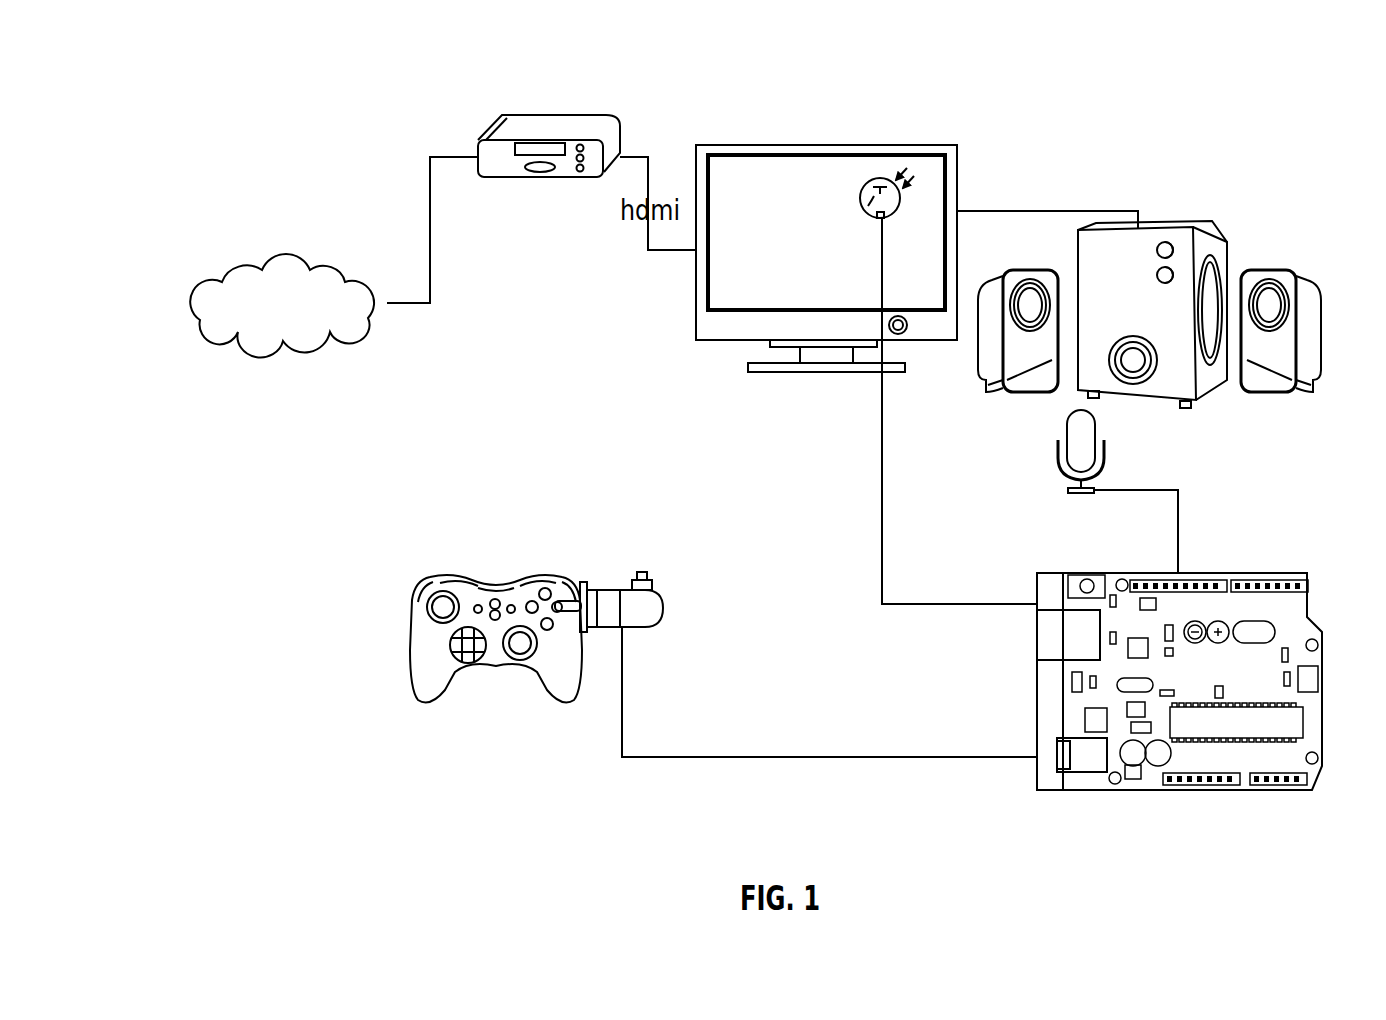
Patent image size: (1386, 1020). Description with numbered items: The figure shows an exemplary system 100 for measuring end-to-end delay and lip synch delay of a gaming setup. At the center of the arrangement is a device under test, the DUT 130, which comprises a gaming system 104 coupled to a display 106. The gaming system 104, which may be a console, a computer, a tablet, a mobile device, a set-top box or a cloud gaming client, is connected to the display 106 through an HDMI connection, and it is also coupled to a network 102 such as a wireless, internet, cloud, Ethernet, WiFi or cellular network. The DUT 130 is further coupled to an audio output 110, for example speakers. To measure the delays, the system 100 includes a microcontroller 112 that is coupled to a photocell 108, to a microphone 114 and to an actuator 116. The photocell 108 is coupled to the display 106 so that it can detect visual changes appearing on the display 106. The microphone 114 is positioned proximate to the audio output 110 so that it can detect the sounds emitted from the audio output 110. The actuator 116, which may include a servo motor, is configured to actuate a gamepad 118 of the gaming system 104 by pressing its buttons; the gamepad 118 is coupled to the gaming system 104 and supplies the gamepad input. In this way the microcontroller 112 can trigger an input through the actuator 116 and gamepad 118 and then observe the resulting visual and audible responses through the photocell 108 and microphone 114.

The system 100 is at (1168, 64).
The network 102 is at (305, 318).
The gaming system 104 is at (604, 116).
The display 106 is at (750, 189).
The photocell 108 is at (866, 205).
The audio output 110 is at (1158, 228).
The microcontroller 112 is at (1262, 598).
The microphone 114 is at (1078, 443).
The actuator 116 is at (656, 594).
The gamepad 118 is at (478, 600).
The DUT 130 is at (986, 198).